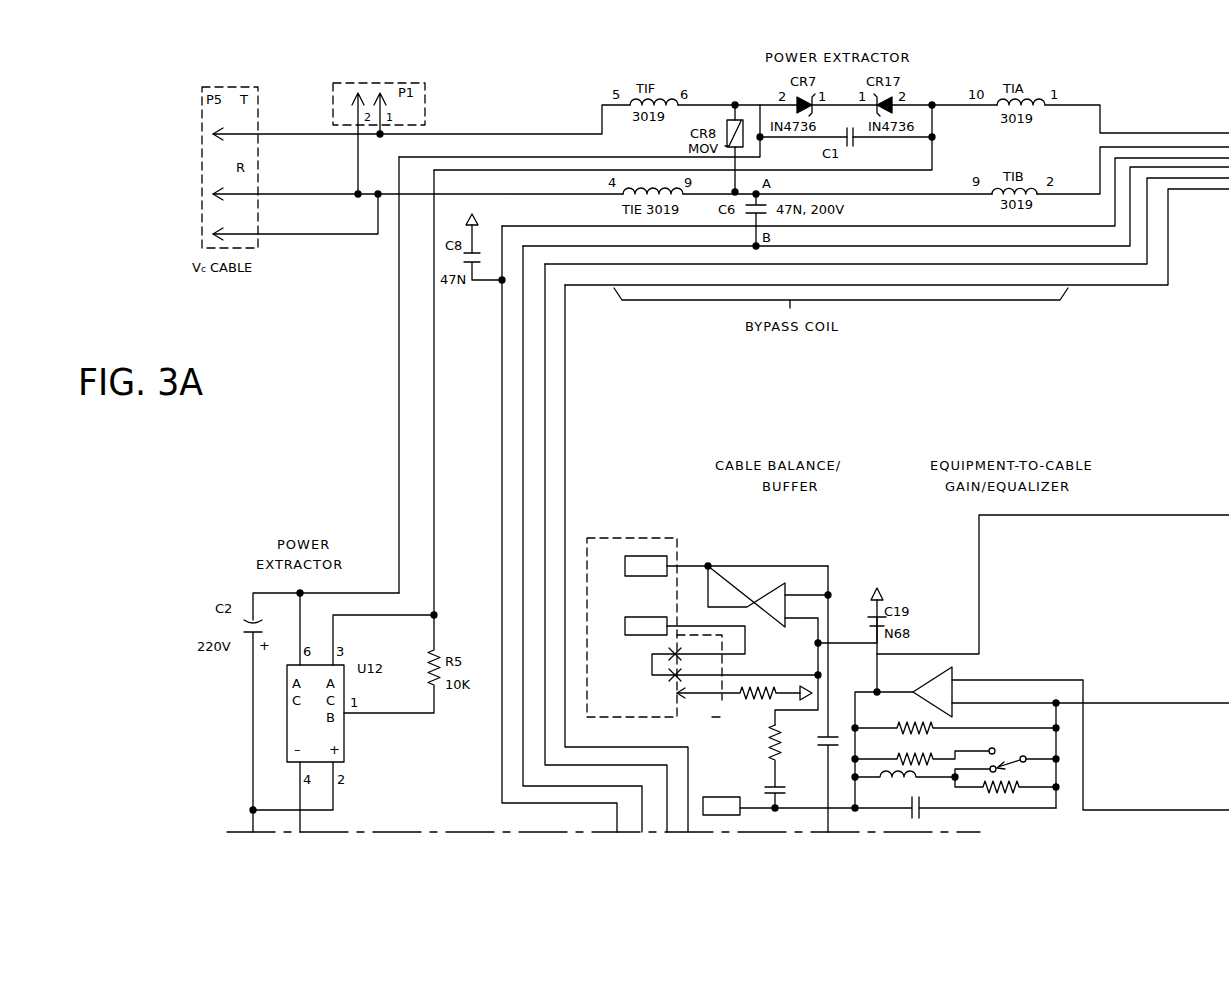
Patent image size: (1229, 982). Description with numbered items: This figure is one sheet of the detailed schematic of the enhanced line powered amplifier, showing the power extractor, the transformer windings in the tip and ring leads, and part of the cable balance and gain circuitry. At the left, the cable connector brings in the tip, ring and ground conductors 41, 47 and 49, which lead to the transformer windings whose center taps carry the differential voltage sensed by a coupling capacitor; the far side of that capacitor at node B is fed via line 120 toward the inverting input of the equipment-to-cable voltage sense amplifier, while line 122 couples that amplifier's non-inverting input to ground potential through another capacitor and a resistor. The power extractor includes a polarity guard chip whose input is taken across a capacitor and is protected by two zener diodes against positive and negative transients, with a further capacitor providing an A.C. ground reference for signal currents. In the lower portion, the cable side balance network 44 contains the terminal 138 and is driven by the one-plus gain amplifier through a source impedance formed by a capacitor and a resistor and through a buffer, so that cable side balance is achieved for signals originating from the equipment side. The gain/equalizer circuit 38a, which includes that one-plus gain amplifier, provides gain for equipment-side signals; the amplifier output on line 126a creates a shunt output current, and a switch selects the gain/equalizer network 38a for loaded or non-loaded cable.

The tip conductor T of cable 41 is at (421, 122).
The ring conductor R of cable 47 is at (418, 188).
The ground conductor of cable 49 is at (297, 215).
The line 120 is at (889, 246).
The line 122 is at (889, 226).
The cable side balance network 44 is at (611, 536).
The cable balance BC terminal 138 is at (657, 556).
The gain/equalizer circuit 38a is at (805, 527).
The line 126a is at (979, 612).